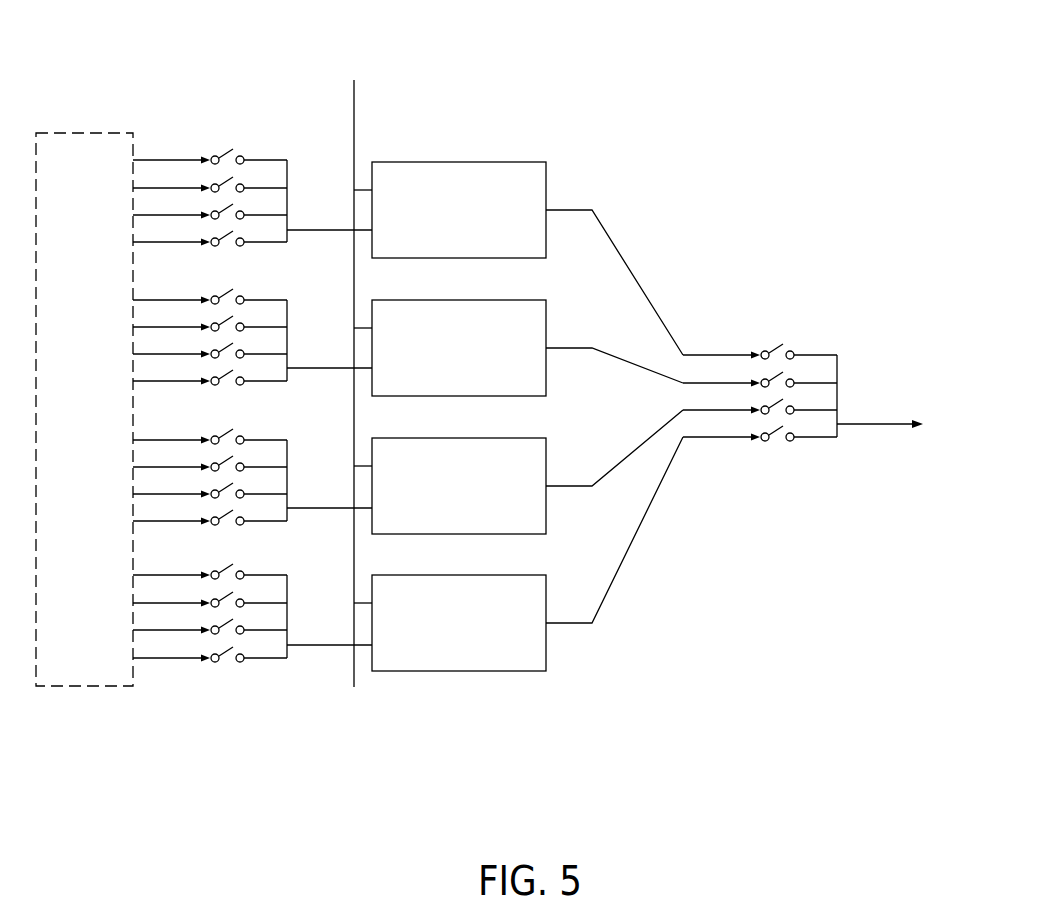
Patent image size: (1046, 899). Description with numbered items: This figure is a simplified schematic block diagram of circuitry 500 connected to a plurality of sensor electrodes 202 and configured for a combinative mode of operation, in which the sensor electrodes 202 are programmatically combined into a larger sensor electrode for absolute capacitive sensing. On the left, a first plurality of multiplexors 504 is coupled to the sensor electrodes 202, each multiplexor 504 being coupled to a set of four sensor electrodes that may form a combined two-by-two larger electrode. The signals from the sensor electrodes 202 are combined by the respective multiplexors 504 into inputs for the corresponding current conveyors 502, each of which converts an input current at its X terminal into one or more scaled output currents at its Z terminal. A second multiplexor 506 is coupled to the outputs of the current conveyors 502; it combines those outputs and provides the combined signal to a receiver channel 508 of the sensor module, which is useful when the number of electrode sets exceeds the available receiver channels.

The circuitry 500 is at (162, 63).
The sensor electrodes 202 is at (65, 224).
The first plurality of multiplexors 504 is at (233, 122).
The current conveyor 502 is at (438, 243).
The second multiplexor 506 is at (759, 310).
The receiver channel 508 is at (867, 428).